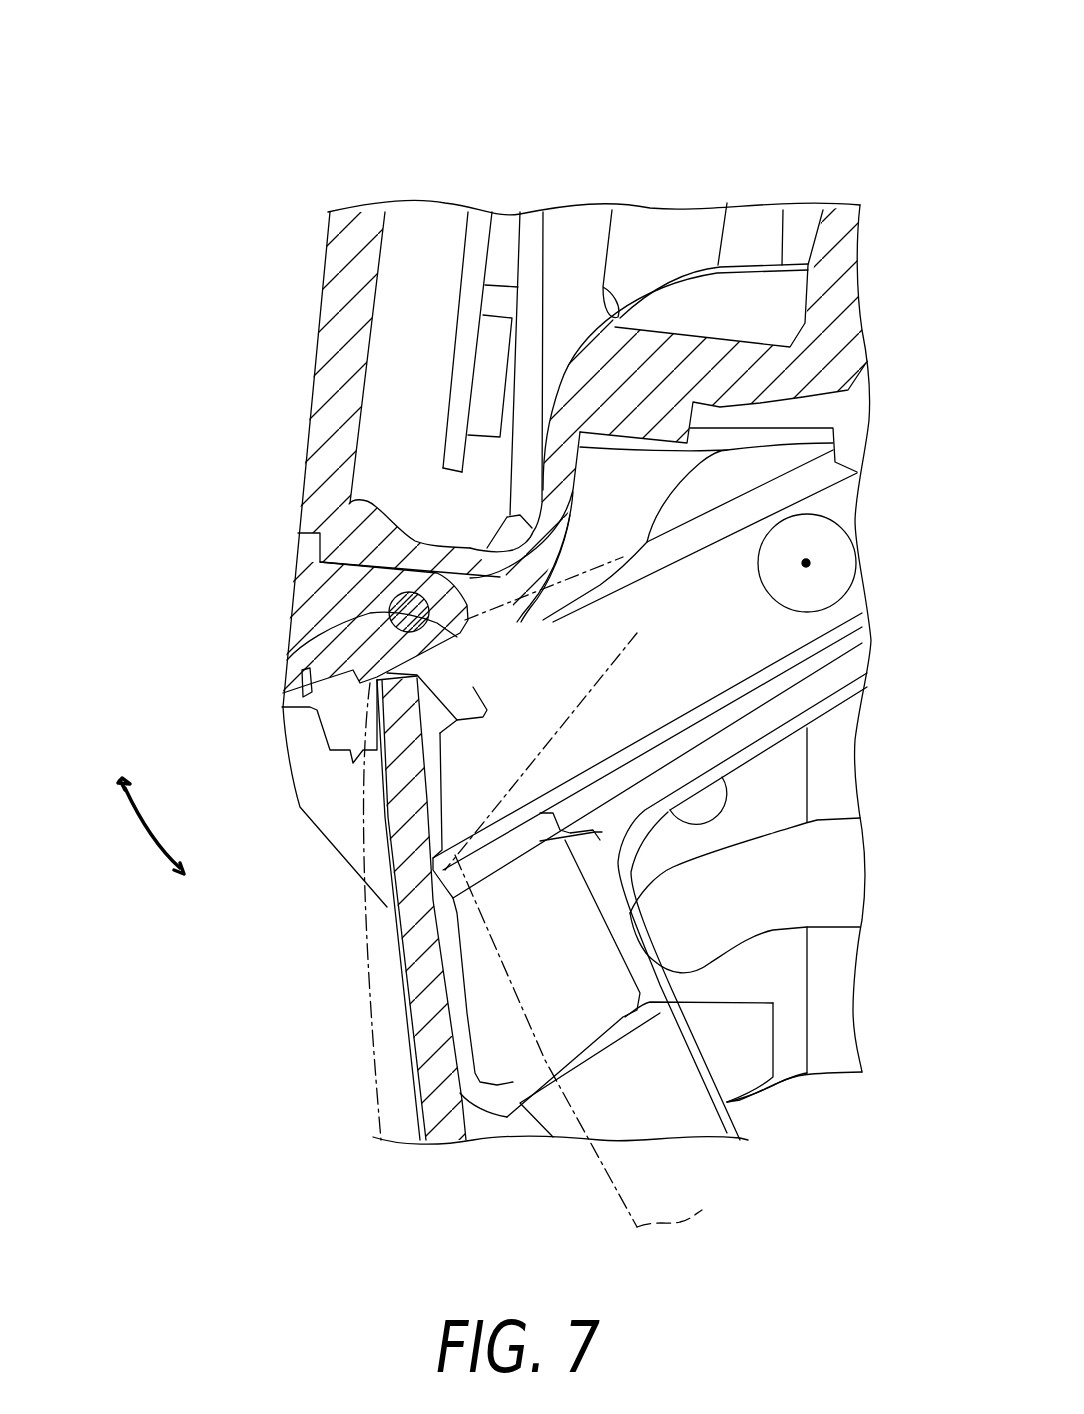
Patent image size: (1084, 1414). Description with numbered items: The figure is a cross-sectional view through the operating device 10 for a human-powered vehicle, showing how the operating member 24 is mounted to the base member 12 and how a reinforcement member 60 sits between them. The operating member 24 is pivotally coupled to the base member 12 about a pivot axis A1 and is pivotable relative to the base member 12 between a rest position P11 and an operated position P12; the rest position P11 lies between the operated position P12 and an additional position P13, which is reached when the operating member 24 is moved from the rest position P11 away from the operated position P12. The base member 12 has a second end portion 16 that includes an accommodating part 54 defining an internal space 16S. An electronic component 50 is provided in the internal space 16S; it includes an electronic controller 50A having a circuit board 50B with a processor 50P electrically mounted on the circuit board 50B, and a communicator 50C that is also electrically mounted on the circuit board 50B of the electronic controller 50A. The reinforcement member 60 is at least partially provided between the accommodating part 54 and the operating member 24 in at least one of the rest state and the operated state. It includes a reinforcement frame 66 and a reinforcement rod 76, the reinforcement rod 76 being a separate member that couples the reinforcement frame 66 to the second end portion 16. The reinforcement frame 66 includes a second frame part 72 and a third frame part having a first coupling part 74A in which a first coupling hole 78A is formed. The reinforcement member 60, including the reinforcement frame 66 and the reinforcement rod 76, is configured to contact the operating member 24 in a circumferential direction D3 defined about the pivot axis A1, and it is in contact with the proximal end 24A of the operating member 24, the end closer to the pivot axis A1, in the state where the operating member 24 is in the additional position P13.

The operating device 10 is at (672, 85).
The base member 12 is at (781, 165).
The second end portion 16 is at (405, 180).
The internal space 16S is at (450, 196).
The operating member 24 is at (457, 1148).
The proximal end 24A is at (400, 775).
The electronic component 50 is at (312, 382).
The electronic controller 50A is at (152, 343).
The circuit board 50B is at (472, 290).
The communicator 50C is at (500, 237).
The processor 50P is at (490, 355).
The accommodating part 54 is at (333, 193).
The reinforcement member 60 is at (309, 616).
The reinforcement frame 66 is at (293, 578).
The second frame part 72 is at (338, 848).
The first coupling part 74A is at (303, 517).
The reinforcement rod 76 is at (397, 592).
The first coupling hole 78A is at (303, 665).
The pivot axis A1 is at (807, 563).
The circumferential direction D3 is at (143, 832).
The rest position P11 is at (400, 998).
The operated position P12 is at (617, 1197).
The additional position P13 is at (380, 1075).